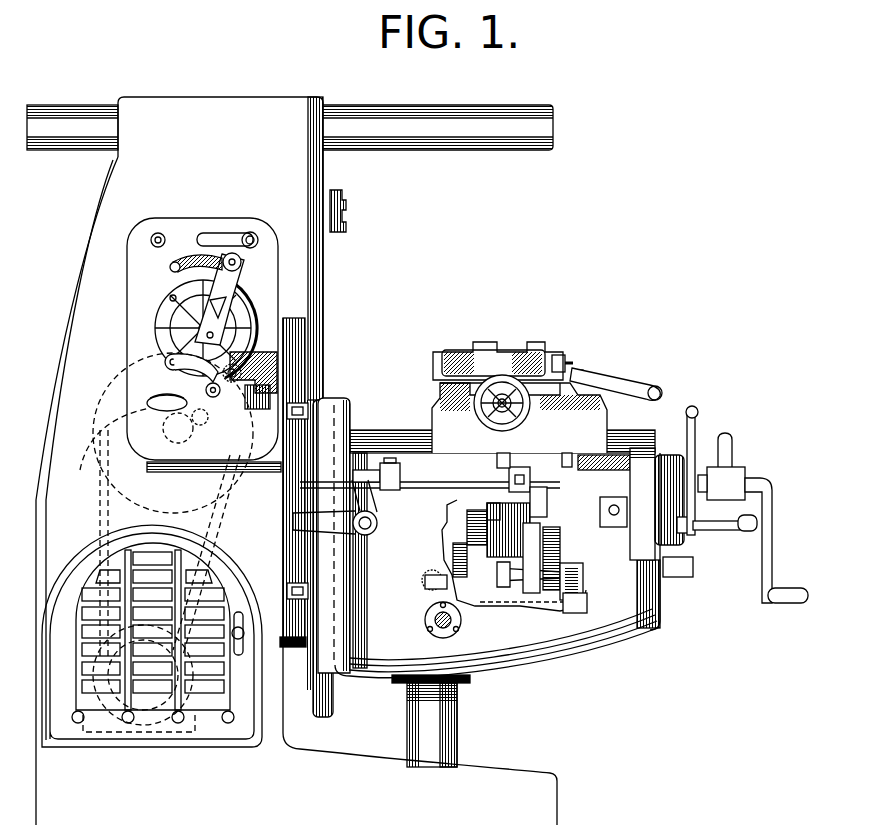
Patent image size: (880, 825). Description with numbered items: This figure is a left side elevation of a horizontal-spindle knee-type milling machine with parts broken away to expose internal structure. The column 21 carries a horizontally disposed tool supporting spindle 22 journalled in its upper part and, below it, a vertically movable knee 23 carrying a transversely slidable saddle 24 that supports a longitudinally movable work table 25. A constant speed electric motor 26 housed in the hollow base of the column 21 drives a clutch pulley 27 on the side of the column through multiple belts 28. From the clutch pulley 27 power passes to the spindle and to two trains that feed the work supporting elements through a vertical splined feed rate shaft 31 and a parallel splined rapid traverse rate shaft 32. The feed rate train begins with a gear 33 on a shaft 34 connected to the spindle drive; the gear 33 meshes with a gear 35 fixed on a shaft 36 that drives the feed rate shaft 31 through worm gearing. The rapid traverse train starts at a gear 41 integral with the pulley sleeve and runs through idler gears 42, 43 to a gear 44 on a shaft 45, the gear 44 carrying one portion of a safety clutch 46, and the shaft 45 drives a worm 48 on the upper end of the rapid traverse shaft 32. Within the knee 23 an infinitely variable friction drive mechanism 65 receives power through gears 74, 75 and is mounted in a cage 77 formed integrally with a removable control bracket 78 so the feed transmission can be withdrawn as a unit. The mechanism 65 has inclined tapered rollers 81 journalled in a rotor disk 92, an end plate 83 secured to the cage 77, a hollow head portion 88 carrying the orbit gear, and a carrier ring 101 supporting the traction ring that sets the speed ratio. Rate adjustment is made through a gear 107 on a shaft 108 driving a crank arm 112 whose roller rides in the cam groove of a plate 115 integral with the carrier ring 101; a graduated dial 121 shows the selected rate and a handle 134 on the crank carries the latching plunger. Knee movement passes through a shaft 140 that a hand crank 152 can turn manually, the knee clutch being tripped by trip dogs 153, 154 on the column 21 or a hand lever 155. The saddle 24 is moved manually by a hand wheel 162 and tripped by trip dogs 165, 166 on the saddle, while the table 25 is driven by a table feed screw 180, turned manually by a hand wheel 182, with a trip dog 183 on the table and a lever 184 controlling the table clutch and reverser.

The column 21 is at (202, 148).
The tool supporting spindle 22 is at (342, 220).
The knee 23 is at (555, 655).
The saddle 24 is at (448, 422).
The work table 25 is at (512, 345).
The electric motor 26 is at (173, 730).
The clutch pulley 27 is at (120, 425).
The multiple belts 28 is at (97, 513).
The feed rate shaft 31 is at (205, 453).
The rapid traverse rate shaft 32 is at (275, 362).
The gear 33 is at (97, 473).
The shaft 34 is at (160, 453).
The gear 35 is at (173, 370).
The shaft 36 is at (187, 400).
The gear 41 is at (160, 417).
The idler gear 42 is at (193, 465).
The idler gear 43 is at (240, 453).
The gear 44 is at (258, 325).
The shaft 45 is at (178, 352).
The safety clutch 46 is at (233, 362).
The worm 48 is at (313, 340).
The infinitely variable friction drive speed changing mechanism 65 is at (455, 530).
The gear 74 is at (447, 570).
The gear 75 is at (458, 562).
The cage 77 is at (575, 588).
The control bracket 78 is at (660, 628).
The tapered rollers 81 is at (563, 613).
The end plate 83 is at (470, 518).
The hollow head portion 88 is at (560, 550).
The disk 92 is at (580, 578).
The carrier ring 101 is at (500, 587).
The gear 107 is at (627, 470).
The shaft 108 is at (600, 437).
The crank arm 112 is at (533, 510).
The plate 115 is at (493, 513).
The graduated dial 121 is at (713, 610).
The handle 134 is at (707, 530).
The shaft 140 is at (697, 473).
The hand crank 152 is at (780, 607).
The trip dog 153 is at (305, 408).
The trip dog 154 is at (290, 587).
The hand lever 155 is at (690, 443).
The hand wheel 162 is at (723, 440).
The trip dog 165 is at (503, 457).
The trip dog 166 is at (572, 490).
The table feed screw 180 is at (500, 397).
The hand wheel 182 is at (475, 407).
The trip dog 183 is at (567, 355).
The lever 184 is at (655, 387).